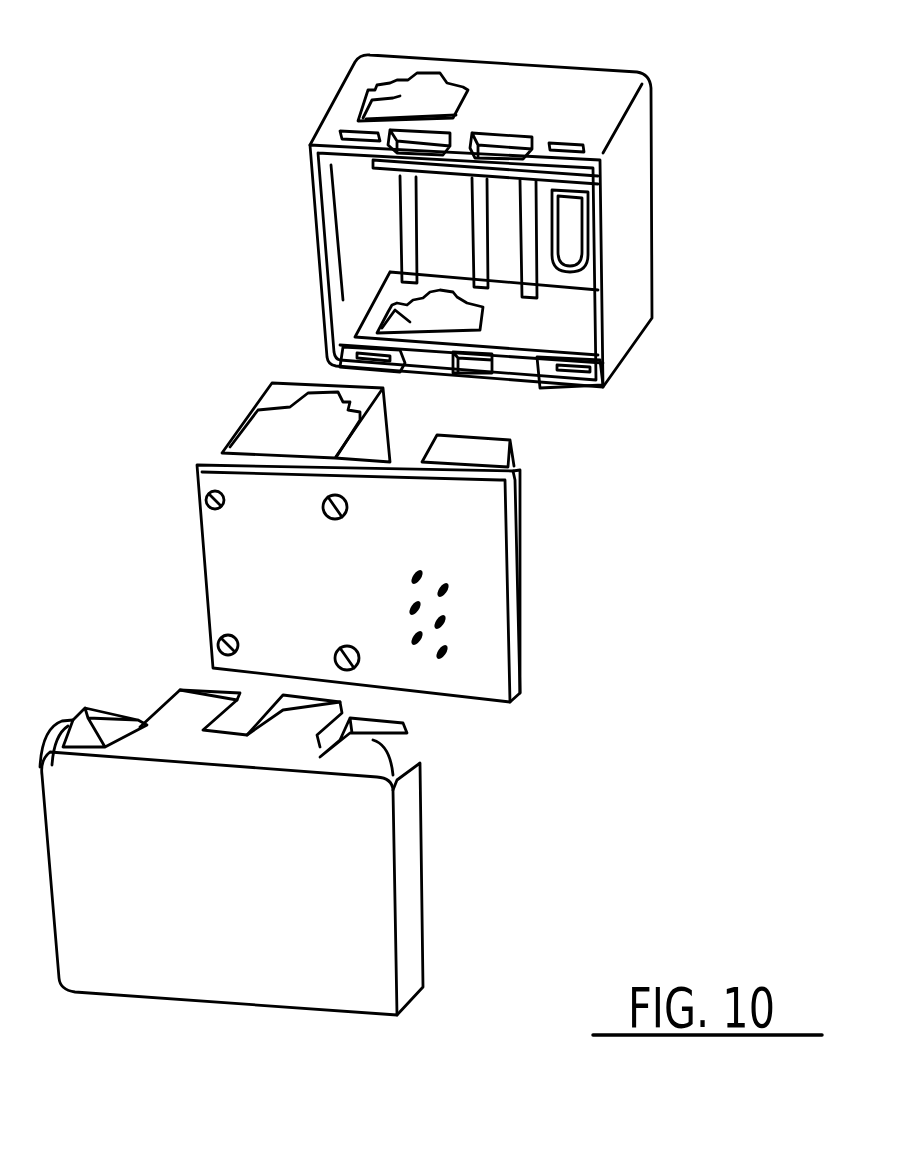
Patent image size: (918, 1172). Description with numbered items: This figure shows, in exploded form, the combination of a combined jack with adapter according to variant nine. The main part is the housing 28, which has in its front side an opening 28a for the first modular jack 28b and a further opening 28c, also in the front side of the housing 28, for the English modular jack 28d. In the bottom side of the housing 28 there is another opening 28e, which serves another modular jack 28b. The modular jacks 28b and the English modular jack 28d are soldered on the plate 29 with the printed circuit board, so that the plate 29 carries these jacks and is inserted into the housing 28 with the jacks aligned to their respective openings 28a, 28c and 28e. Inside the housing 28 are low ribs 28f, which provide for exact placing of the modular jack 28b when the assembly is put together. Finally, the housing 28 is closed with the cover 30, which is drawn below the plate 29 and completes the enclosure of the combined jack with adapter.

The housing 28 is at (620, 286).
The opening 28a is at (372, 101).
The modular jack 28b is at (288, 425).
The opening 28c is at (565, 240).
The English modular jack 28d is at (478, 455).
The opening 28e is at (395, 305).
The low ribs 28f is at (525, 225).
The plate with printed circuit board 29 is at (485, 608).
The cover 30 is at (385, 887).